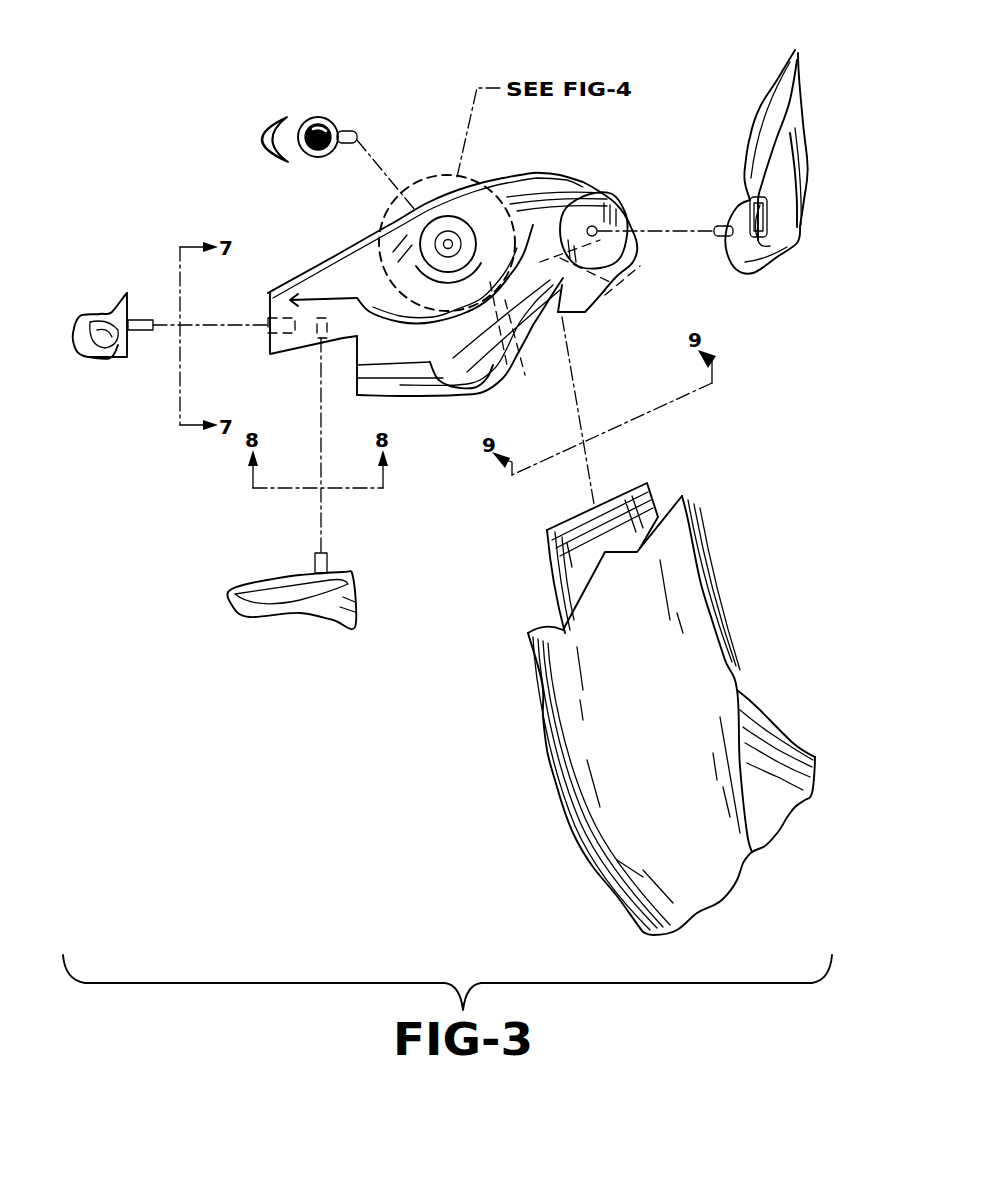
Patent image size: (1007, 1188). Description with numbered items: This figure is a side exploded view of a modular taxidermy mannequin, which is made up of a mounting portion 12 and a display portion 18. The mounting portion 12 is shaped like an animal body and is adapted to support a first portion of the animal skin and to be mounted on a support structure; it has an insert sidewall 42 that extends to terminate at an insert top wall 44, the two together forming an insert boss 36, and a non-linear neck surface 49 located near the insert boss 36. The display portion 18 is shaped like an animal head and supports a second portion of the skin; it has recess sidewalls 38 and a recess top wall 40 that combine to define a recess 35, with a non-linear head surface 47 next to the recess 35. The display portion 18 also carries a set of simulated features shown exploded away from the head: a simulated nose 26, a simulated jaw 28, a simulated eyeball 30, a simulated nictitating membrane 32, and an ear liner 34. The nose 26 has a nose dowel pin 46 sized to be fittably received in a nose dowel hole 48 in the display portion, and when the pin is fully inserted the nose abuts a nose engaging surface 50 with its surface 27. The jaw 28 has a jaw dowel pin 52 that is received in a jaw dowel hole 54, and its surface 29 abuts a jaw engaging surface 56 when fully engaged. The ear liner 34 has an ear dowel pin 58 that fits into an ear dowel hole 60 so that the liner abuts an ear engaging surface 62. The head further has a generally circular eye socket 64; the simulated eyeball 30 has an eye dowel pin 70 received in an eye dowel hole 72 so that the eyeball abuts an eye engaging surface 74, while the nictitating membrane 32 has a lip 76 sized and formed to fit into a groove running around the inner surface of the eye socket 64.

The mounting portion 12 is at (552, 858).
The display portion 18 is at (302, 256).
The simulated nose 26 is at (88, 317).
The surface 27 is at (130, 307).
The simulated jaw 28 is at (272, 610).
The surface 29 is at (288, 583).
The simulated eyeball 30 is at (324, 117).
The simulated nictitating membrane 32 is at (268, 128).
The ear liner 34 is at (753, 123).
The recess 35 is at (600, 296).
The insert boss 36 is at (565, 518).
The recess sidewalls 38 is at (604, 291).
The recess top wall 40 is at (537, 258).
The insert sidewall 42 is at (656, 492).
The insert top wall 44 is at (624, 484).
The nose dowel pin 46 is at (143, 333).
The non-linear head surface 47 is at (570, 315).
The nose dowel hole 48 is at (268, 326).
The non-linear neck surface 49 is at (592, 585).
The nose engaging surface 50 is at (268, 312).
The jaw dowel pin 52 is at (328, 563).
The jaw dowel hole 54 is at (322, 318).
The jaw engaging surface 56 is at (303, 345).
The ear dowel pin 58 is at (727, 227).
The ear dowel hole 60 is at (594, 226).
The ear engaging surface 62 is at (577, 210).
The eye socket 64 is at (410, 222).
The eye dowel pin 70 is at (347, 130).
The eye dowel hole 72 is at (455, 240).
The eye engaging surface 74 is at (448, 232).
The lip 76 is at (268, 141).